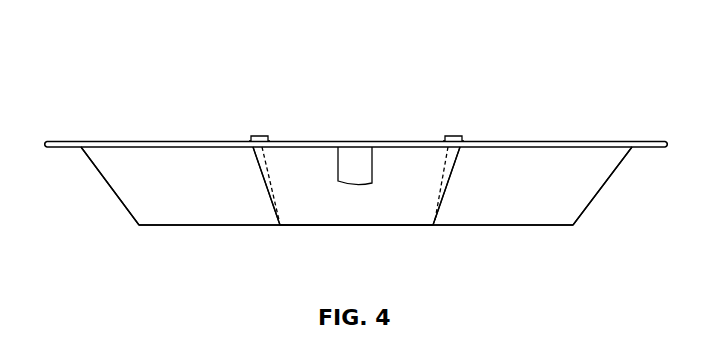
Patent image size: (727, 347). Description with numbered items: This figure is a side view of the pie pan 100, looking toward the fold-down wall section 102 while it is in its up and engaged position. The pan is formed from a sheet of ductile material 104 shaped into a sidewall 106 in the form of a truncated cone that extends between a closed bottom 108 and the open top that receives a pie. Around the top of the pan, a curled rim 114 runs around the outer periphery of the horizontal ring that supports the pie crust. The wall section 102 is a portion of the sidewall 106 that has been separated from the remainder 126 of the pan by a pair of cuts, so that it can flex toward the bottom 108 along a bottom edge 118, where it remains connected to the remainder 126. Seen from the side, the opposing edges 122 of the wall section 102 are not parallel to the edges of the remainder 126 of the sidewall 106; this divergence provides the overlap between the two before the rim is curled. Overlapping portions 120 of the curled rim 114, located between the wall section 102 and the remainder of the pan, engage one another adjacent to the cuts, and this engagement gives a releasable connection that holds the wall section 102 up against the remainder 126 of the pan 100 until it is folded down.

The pie pan 100 is at (148, 50).
The fold-down wall section 102 is at (317, 205).
The sheet of ductile material 104 is at (592, 178).
The sidewall 106 is at (186, 197).
The closed bottom 108 is at (493, 226).
The curled rim 114 is at (108, 141).
The bottom edge 118 is at (368, 226).
The overlapping portions of the curled rim 120 is at (262, 134).
The opposing edges of the wall section 122 is at (258, 167).
The remainder of the pan 126 is at (548, 203).